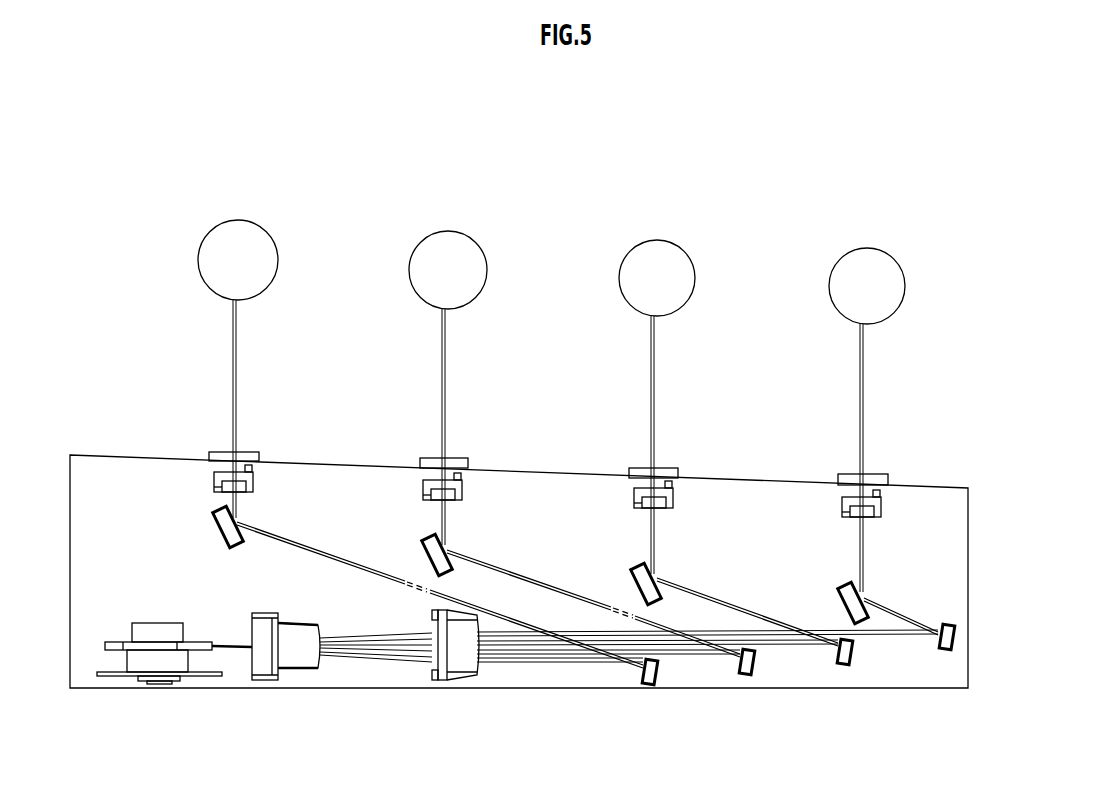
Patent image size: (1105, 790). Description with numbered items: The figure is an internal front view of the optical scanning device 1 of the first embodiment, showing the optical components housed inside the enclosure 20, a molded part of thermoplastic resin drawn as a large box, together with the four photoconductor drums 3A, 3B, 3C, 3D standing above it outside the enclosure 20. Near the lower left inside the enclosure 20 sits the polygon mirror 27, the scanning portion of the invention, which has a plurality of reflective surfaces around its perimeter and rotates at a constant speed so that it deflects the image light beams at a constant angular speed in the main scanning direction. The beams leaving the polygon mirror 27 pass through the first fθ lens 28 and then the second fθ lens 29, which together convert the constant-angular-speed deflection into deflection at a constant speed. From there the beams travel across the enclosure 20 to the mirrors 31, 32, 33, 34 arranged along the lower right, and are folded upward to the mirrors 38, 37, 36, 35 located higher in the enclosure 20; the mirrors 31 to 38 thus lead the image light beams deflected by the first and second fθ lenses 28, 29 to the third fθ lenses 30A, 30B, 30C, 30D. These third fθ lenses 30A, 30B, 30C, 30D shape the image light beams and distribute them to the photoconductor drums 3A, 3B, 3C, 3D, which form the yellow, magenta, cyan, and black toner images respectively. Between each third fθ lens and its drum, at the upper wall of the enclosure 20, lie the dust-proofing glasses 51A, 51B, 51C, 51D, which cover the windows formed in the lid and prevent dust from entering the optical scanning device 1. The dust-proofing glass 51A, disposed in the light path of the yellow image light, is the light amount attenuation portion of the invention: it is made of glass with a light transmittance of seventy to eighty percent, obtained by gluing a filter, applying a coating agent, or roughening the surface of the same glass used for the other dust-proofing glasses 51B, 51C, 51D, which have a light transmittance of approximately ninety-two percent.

The optical scanning device 1 is at (1015, 465).
The photoconductor drum 3A is at (213, 228).
The photoconductor drum 3B is at (427, 235).
The photoconductor drum 3C is at (637, 242).
The photoconductor drum 3D is at (847, 252).
The enclosure 20 is at (968, 688).
The polygon mirror 27 is at (117, 652).
The first fθ lens 28 is at (298, 657).
The second fθ lens 29 is at (460, 662).
The third fθ lens 30A is at (238, 484).
The third fθ lens 30B is at (450, 493).
The third fθ lens 30C is at (660, 500).
The third fθ lens 30D is at (867, 508).
The mirror 31 is at (645, 684).
The mirror 32 is at (743, 674).
The mirror 33 is at (840, 664).
The mirror 34 is at (942, 650).
The mirror 35 is at (840, 588).
The mirror 36 is at (632, 567).
The mirror 37 is at (422, 542).
The mirror 38 is at (213, 512).
The dust-proofing glass 51A is at (212, 452).
The dust-proofing glass 51B is at (422, 458).
The dust-proofing glass 51C is at (630, 468).
The dust-proofing glass 51D is at (842, 473).